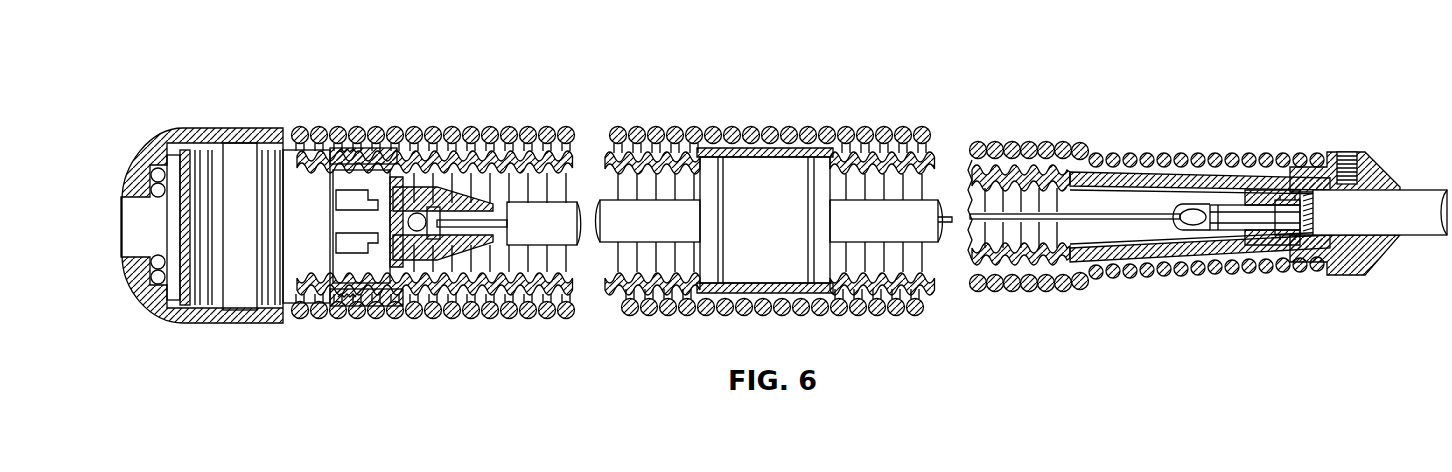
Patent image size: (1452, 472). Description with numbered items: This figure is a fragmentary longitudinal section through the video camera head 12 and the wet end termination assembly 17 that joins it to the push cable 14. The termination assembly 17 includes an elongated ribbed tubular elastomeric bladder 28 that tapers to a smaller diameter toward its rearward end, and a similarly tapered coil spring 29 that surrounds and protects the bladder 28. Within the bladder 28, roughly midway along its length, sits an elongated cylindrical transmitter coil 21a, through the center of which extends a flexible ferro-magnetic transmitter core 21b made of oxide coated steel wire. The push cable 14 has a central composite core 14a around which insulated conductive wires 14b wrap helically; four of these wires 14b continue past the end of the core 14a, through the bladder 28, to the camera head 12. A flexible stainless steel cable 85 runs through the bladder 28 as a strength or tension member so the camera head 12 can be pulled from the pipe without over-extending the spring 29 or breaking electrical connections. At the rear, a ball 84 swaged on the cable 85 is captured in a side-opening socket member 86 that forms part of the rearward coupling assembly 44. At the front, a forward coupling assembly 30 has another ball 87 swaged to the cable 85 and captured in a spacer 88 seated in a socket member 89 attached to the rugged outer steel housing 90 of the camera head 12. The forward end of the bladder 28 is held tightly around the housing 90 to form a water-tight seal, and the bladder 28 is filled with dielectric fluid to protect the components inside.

The video camera head 12 is at (236, 324).
The push cable 14 is at (1426, 192).
The composite core 14a is at (1228, 226).
The conductive wires 14b is at (1286, 235).
The wet end termination assembly 17 is at (378, 322).
The transmitter coil 21a is at (792, 172).
The transmitter core 21b is at (648, 205).
The bladder 28 is at (638, 160).
The coil spring 29 is at (726, 150).
The forward coupling assembly 30 is at (780, 220).
The rearward coupling assembly 44 is at (1390, 258).
The ball 84 is at (1192, 208).
The flexible cable 85 is at (477, 229).
The socket member 86 is at (1180, 208).
The ball 87 is at (436, 205).
The spacer 88 is at (423, 240).
The socket member 89 is at (463, 197).
The outer steel housing 90 is at (413, 214).